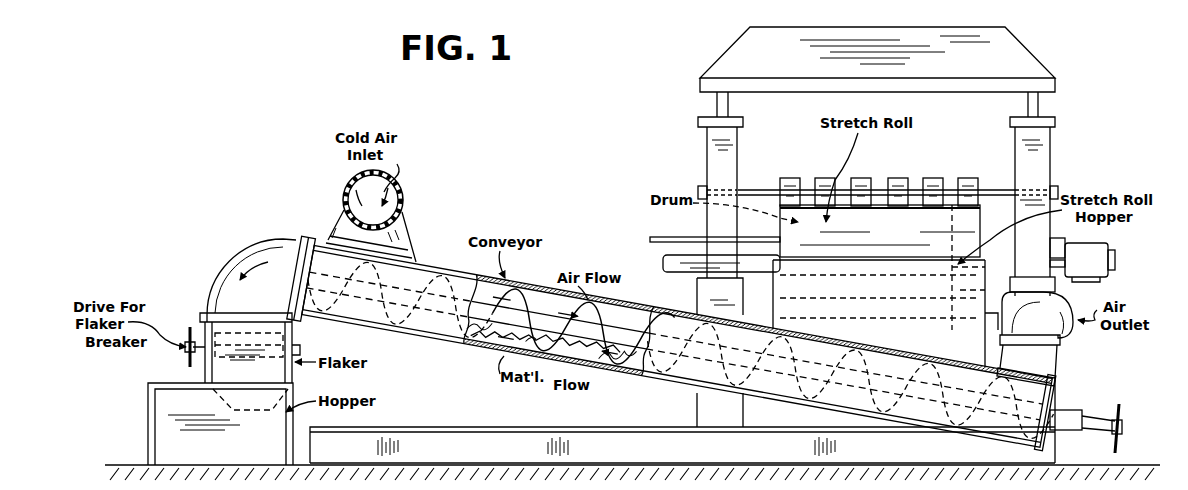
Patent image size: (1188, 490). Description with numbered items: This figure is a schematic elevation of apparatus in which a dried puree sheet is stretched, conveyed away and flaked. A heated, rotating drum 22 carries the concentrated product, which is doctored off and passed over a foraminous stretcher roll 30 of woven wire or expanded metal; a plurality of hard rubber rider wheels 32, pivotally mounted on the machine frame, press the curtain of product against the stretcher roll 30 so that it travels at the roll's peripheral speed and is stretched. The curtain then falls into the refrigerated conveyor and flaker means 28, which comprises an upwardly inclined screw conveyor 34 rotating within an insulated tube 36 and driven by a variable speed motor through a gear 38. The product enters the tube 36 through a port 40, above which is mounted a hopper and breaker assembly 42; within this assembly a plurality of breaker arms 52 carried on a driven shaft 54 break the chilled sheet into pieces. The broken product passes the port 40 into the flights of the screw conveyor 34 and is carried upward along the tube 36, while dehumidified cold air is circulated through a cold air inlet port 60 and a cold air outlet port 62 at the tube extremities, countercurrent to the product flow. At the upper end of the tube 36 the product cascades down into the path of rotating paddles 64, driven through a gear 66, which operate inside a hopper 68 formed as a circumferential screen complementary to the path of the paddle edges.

The drum 22 is at (950, 180).
The refrigerated conveyor and flaker means 28 is at (650, 382).
The foraminous stretcher roll 30 is at (880, 231).
The rider wheels 32 is at (920, 178).
The screw conveyor 34 is at (543, 282).
The insulated tube 36 is at (613, 370).
The gear 38 is at (1121, 418).
The port 40 is at (948, 352).
The hopper and breaker assembly 42 is at (970, 296).
The breaker arms 52 is at (800, 292).
The shaft 54 is at (1042, 293).
The cold air inlet port 60 is at (400, 206).
The cold air outlet port 62 is at (1068, 338).
The paddles 64 is at (284, 338).
The gear 66 is at (190, 327).
The hopper 68 is at (292, 380).